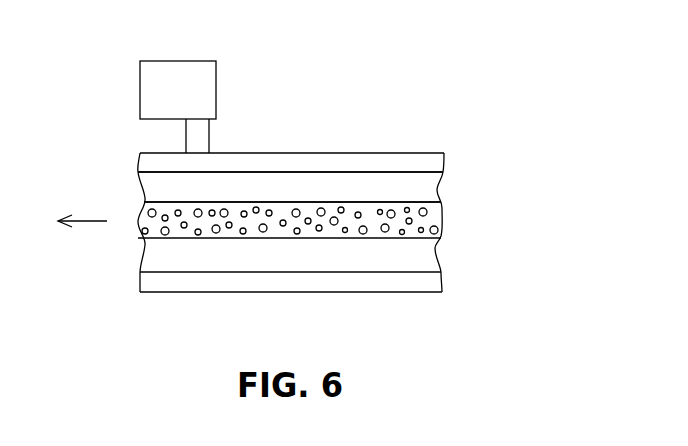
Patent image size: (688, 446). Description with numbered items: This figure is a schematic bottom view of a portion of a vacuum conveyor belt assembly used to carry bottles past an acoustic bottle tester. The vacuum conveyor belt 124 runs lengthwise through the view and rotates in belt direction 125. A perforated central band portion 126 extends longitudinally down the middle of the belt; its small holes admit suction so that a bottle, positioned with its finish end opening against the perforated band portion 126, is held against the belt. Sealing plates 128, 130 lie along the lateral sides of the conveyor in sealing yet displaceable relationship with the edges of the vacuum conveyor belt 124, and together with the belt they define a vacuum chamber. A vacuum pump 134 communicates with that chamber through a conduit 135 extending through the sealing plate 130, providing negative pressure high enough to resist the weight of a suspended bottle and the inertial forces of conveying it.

The vacuum conveyor belt 124 is at (405, 183).
The belt direction 125 is at (83, 220).
The perforated central band portion 126 is at (430, 217).
The sealing plate 128 is at (370, 282).
The sealing plate 130 is at (316, 158).
The vacuum pump 134 is at (175, 80).
The conduit 135 is at (200, 135).